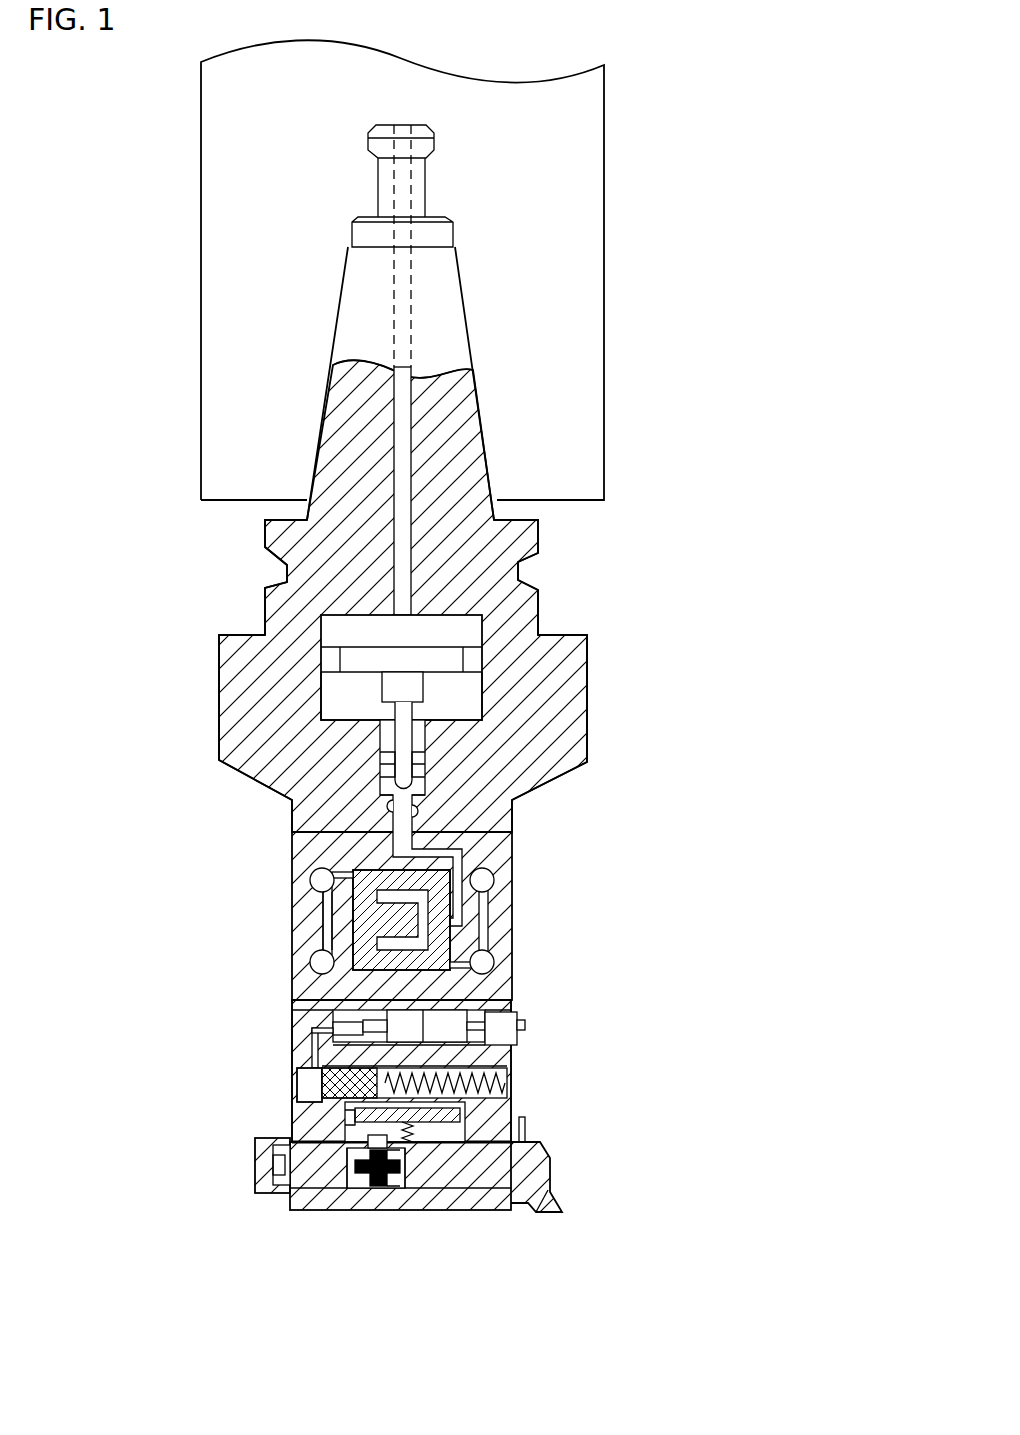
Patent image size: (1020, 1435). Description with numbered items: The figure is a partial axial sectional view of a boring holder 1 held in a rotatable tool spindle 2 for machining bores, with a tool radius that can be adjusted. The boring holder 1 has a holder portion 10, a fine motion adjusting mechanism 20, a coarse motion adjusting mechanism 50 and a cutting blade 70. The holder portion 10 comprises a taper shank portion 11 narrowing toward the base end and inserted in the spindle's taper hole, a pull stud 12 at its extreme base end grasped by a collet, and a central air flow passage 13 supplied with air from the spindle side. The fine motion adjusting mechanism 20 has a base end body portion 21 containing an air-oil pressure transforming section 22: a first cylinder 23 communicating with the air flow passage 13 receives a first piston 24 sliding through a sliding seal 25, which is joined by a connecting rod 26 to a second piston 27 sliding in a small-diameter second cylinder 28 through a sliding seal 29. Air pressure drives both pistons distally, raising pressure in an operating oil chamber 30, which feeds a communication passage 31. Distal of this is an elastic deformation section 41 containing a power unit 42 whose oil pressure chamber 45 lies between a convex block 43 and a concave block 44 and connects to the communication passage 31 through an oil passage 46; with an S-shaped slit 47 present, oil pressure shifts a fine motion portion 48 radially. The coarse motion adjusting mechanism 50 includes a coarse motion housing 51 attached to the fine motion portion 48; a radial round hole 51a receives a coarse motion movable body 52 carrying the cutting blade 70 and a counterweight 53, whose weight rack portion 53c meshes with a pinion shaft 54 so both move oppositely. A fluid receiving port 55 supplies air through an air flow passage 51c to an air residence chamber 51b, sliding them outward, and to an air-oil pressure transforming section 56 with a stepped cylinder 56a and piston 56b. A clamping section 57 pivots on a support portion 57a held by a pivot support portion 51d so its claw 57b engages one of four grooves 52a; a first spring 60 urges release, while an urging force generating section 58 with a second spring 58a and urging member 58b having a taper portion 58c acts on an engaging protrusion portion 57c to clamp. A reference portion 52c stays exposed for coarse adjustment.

The boring holder 1 is at (553, 582).
The tool spindle 2 is at (606, 105).
The holder portion 10 is at (476, 328).
The taper shank portion 11 is at (478, 392).
The pull stud 12 is at (437, 188).
The air flow passage 13 is at (410, 488).
The fine motion adjusting mechanism 20 is at (647, 705).
The base end body portion 21 is at (553, 625).
The air-oil pressure transforming section 22 is at (487, 690).
The first cylinder 23 is at (330, 618).
The first piston 24 is at (360, 675).
The sliding seal 25 is at (333, 660).
The connecting rod 26 is at (400, 690).
The second piston 27 is at (403, 745).
The second cylinder 28 is at (386, 806).
The sliding seal 29 is at (385, 762).
The operating oil chamber 30 is at (412, 798).
The communication passage 31 is at (422, 812).
The elastic deformation section 41 is at (553, 909).
The power unit 42 is at (452, 937).
The convex block 43 is at (330, 920).
The concave block 44 is at (490, 964).
The oil pressure chamber 45 is at (319, 962).
The oil passage 46 is at (462, 852).
The S-shaped slit 47 is at (325, 890).
The fine motion portion 48 is at (345, 996).
The coarse motion adjusting mechanism 50 is at (612, 1053).
The coarse motion housing 51 is at (506, 1005).
The round hole 51a is at (320, 1198).
The air residence chamber 51b is at (402, 1195).
The air flow passage 51c is at (506, 1056).
The pivot support portion 51d is at (315, 1078).
The coarse motion movable body 52 is at (487, 1195).
The grooves 52a is at (443, 1195).
The reference portion 52c is at (530, 1138).
The counterweight 53 is at (282, 1195).
The weight rack portion 53c is at (357, 1195).
The pinion shaft 54 is at (380, 1195).
The fluid receiving port 55 is at (518, 1042).
The air-oil pressure transforming section 56 is at (373, 1025).
The stepped cylinder 56a is at (362, 1027).
The piston 56b is at (395, 1036).
The clamping section 57 is at (528, 1118).
The support portion 57a is at (345, 1116).
The claw 57b is at (505, 1165).
The engaging protrusion portion 57c is at (500, 1110).
The urging force generating section 58 is at (345, 1080).
The second spring 58a is at (505, 1085).
The urging member 58b is at (300, 1085).
The taper portion 58c is at (360, 1140).
The first spring 60 is at (412, 1195).
The cutting blade 70 is at (552, 1206).